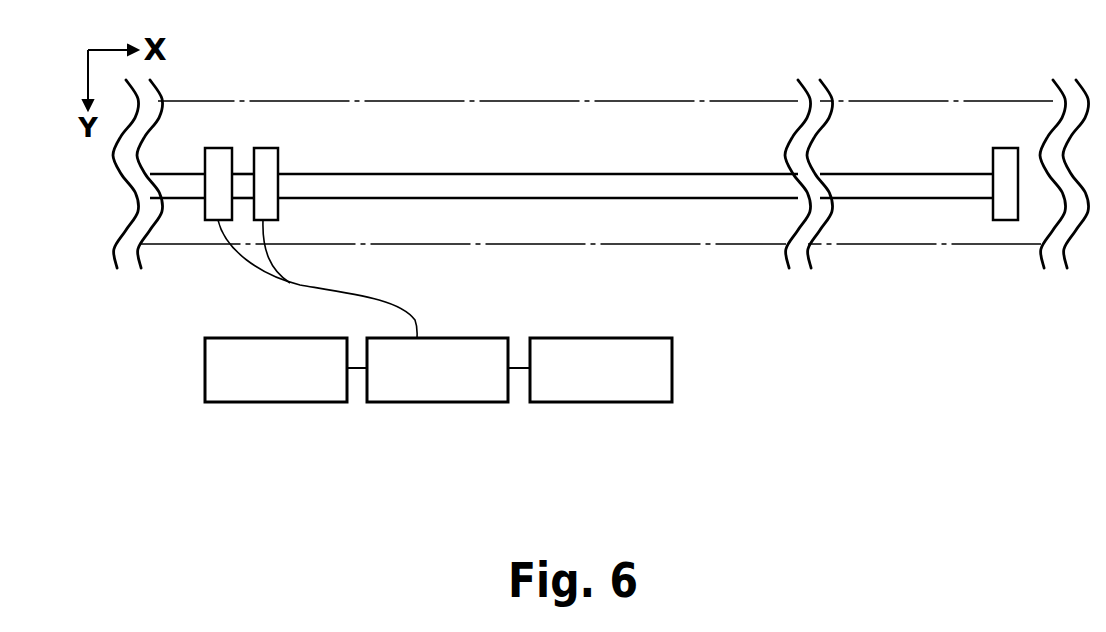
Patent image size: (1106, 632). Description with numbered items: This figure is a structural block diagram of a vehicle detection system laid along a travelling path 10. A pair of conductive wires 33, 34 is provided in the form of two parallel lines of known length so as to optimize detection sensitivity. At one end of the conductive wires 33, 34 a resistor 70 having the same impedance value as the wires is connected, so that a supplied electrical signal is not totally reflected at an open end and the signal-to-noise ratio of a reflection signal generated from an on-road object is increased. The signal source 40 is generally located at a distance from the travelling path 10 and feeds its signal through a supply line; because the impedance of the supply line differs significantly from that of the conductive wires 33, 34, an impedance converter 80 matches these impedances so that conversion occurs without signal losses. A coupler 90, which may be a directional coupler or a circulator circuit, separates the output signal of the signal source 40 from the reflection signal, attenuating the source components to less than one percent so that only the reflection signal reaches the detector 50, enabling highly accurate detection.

The travelling path 10 is at (383, 100).
The conductive wire 33 is at (498, 173).
The conductive wire 34 is at (600, 197).
The impedance converter 80 is at (205, 220).
The resistor 70 is at (1008, 220).
The signal source 40 is at (268, 402).
The coupler 90 is at (420, 402).
The detector 50 is at (573, 402).